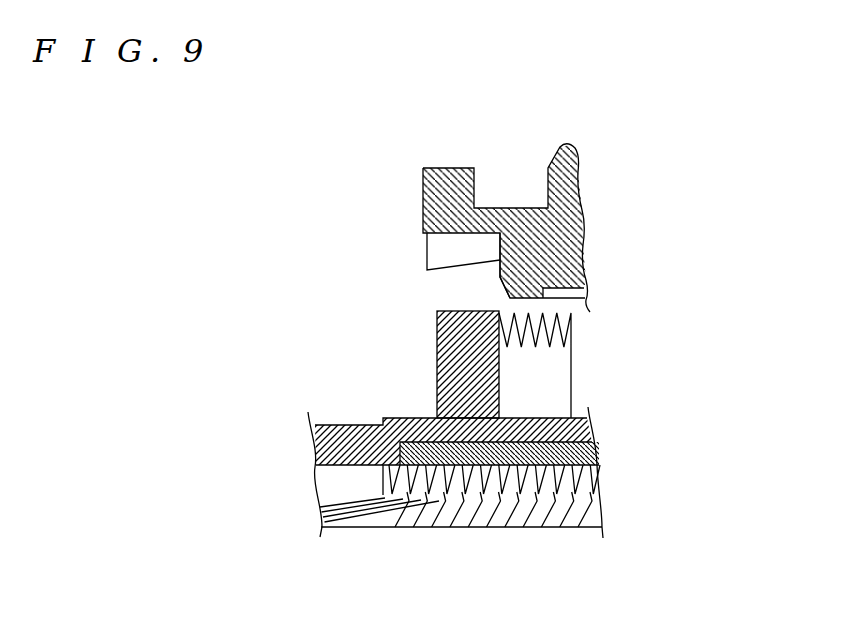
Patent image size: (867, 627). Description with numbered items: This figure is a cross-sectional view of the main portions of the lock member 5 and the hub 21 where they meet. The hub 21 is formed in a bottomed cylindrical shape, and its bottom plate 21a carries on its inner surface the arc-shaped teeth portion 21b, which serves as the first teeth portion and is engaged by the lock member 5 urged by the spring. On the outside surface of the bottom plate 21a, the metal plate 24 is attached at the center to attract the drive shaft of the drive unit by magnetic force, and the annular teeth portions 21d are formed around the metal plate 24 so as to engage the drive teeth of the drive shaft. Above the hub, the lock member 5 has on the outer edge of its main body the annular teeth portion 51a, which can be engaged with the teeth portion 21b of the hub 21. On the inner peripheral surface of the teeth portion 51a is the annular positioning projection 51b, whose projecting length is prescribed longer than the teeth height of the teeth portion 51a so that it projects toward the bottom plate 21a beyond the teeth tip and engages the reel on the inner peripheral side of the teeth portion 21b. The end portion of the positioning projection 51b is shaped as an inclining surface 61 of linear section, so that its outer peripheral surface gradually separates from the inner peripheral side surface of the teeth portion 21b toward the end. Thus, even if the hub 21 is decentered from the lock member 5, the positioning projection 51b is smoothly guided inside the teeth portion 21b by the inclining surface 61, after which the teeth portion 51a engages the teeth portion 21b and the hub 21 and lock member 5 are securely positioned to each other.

The lock member 5 is at (611, 196).
The teeth portion 51a is at (440, 251).
The positioning projection 51b is at (500, 277).
The inclining surface 61 is at (504, 293).
The hub 21 is at (629, 485).
The bottom plate 21a is at (590, 428).
The teeth portion 21b is at (437, 369).
The annular teeth portion 21d is at (508, 530).
The metal plate 24 is at (568, 530).